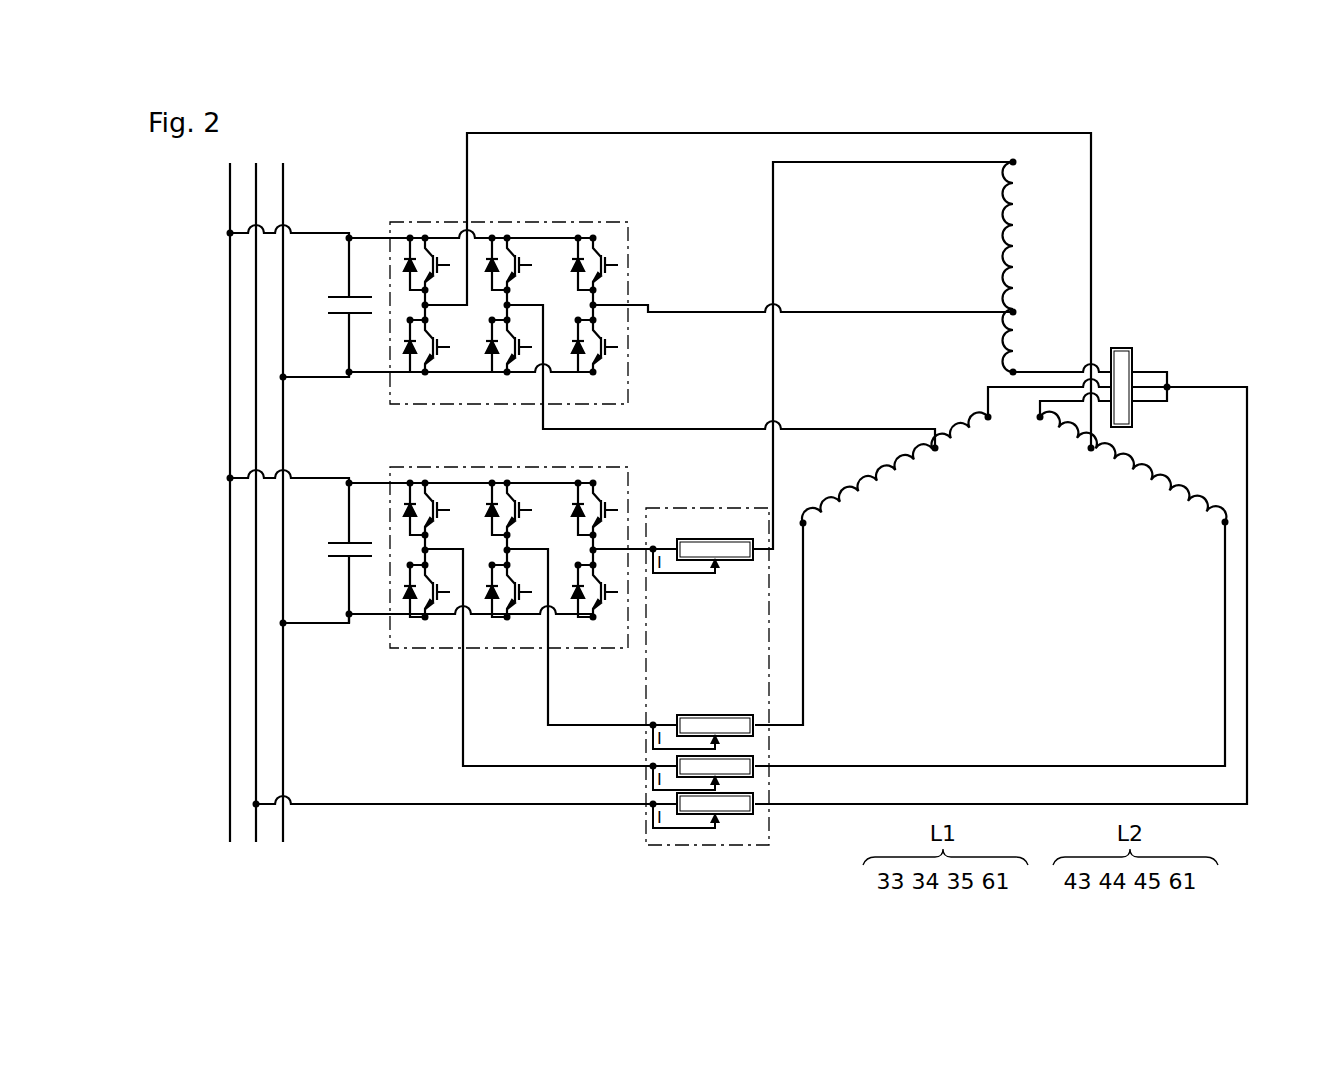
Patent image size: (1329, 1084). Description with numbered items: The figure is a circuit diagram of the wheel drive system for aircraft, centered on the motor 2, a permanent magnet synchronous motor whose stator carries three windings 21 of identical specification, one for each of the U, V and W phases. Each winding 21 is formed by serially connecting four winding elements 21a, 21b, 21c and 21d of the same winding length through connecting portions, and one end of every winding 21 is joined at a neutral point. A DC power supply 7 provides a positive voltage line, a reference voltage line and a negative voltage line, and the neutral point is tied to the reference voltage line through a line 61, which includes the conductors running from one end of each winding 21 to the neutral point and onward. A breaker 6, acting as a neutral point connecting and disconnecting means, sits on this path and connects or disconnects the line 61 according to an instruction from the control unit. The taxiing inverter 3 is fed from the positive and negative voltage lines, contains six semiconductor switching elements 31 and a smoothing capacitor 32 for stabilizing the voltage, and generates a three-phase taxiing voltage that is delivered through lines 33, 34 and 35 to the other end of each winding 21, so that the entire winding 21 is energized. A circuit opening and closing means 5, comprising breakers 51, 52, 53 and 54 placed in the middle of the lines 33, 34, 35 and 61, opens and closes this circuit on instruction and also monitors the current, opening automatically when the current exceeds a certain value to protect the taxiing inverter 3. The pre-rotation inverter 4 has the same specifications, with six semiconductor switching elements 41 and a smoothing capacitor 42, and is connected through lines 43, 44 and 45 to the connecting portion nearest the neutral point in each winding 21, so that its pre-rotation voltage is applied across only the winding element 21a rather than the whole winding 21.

The motor 2 is at (1006, 403).
The taxiing inverter 3 is at (511, 540).
The pre-rotation inverter 4 is at (511, 291).
The circuit opening and closing means 5 is at (746, 676).
The breaker 6 is at (1133, 356).
The power supply 7 is at (175, 712).
The winding 21 is at (1000, 247).
The winding element 21a is at (1020, 350).
The winding element 21b is at (1020, 300).
The winding element 21c is at (1020, 245).
The winding element 21d is at (1020, 192).
The semiconductor switching element 31 is at (440, 495).
The smoothing capacitor 32 is at (340, 562).
The line 33 is at (773, 490).
The line 34 is at (548, 710).
The line 35 is at (463, 740).
The semiconductor switching element 41 is at (440, 250).
The smoothing capacitor 42 is at (340, 318).
The line 43 is at (715, 312).
The line 44 is at (715, 429).
The line 45 is at (705, 134).
The breaker 51 is at (725, 563).
The breaker 52 is at (736, 715).
The breaker 53 is at (750, 754).
The breaker 54 is at (745, 816).
The line 61 is at (360, 804).